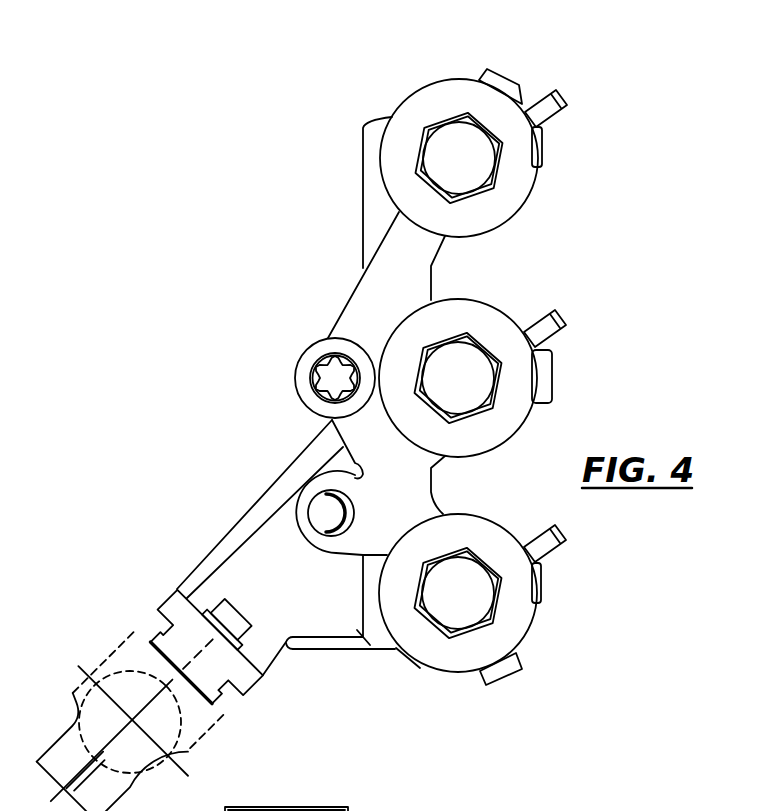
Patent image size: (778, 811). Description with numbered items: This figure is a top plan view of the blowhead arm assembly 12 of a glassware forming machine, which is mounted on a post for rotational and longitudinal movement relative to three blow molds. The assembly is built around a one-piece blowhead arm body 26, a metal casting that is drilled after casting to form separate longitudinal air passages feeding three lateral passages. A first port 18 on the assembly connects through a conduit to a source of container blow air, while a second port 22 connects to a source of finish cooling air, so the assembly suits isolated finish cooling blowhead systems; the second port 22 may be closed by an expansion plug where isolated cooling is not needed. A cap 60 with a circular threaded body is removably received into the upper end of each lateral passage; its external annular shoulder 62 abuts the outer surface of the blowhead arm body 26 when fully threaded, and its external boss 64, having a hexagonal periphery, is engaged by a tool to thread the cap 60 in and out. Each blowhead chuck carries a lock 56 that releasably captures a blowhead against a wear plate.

The blowhead arm assembly 12 is at (264, 289).
The first port 18 is at (313, 370).
The second port 22 is at (323, 503).
The blowhead arm body 26 is at (228, 522).
The lock 56 is at (566, 104).
The cap 60 is at (436, 76).
The external annular shoulder 62 is at (533, 184).
The external boss 64 is at (477, 175).